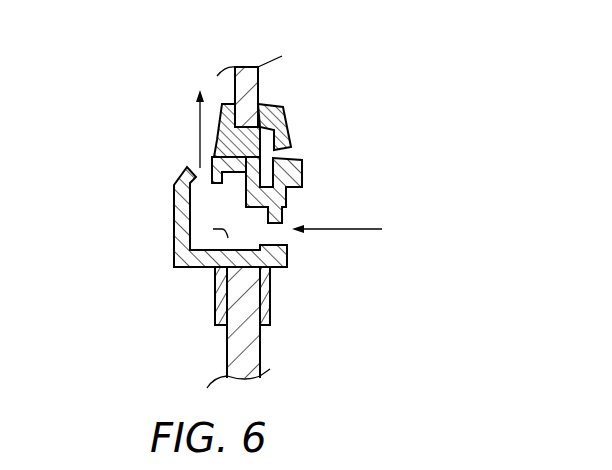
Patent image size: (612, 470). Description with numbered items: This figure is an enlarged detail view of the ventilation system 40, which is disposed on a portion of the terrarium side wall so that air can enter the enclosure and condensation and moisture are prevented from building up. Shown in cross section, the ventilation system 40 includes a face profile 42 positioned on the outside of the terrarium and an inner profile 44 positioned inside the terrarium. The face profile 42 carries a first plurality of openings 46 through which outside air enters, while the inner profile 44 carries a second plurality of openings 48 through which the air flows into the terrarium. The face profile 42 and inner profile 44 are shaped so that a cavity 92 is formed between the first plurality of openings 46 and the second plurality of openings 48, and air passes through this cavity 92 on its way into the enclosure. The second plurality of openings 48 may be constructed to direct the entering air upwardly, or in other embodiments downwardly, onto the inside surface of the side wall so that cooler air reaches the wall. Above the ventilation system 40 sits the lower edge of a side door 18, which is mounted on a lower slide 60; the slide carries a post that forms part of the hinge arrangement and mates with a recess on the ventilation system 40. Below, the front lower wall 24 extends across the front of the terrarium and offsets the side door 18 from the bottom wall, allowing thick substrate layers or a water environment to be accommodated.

The ventilation system 40 is at (153, 99).
The side door 18 is at (260, 88).
The lower slide 60 is at (288, 133).
The face profile 42 is at (303, 183).
The second plurality of openings 48 is at (199, 170).
The inner profile 44 is at (173, 230).
The first plurality of openings 46 is at (283, 239).
The cavity 92 is at (213, 235).
The front lower wall 24 is at (260, 357).